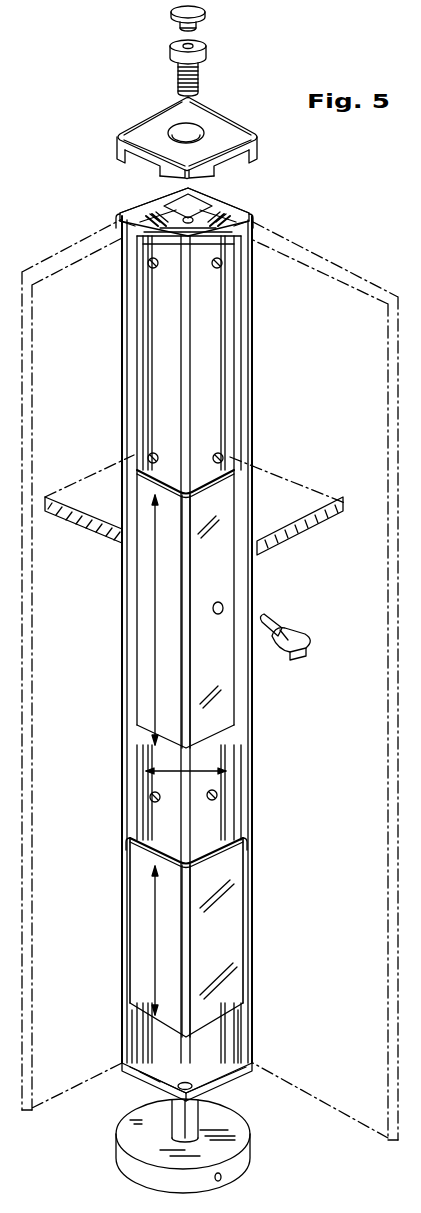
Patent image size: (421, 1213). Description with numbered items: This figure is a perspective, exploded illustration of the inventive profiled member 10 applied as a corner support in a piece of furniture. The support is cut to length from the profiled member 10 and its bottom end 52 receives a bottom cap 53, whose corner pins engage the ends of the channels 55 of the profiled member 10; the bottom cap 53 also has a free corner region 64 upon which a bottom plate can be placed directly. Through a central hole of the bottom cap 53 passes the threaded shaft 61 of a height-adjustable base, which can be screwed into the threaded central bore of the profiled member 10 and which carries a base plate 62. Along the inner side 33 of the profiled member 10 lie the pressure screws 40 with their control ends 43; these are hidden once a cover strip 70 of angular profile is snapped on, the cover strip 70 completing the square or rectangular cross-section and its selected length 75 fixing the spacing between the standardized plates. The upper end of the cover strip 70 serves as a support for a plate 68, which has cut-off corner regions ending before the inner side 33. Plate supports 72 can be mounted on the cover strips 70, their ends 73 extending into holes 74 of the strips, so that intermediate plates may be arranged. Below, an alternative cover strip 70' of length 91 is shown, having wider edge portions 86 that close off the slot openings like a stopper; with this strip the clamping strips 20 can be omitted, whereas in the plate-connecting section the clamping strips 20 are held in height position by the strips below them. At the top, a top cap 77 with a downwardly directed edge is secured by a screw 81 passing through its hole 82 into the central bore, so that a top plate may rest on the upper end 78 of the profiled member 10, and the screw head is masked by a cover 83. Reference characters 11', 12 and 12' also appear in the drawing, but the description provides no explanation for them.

The cover 83 is at (171, 14).
The screw 81 is at (170, 58).
The hole 82 is at (176, 128).
The top cap 77 is at (118, 136).
The upper end 78 is at (176, 212).
The clamping strip 20 is at (150, 214).
The wall panel 11' is at (206, 678).
The profiled member 10 is at (118, 655).
The inner side 33 is at (155, 362).
The control ends 43 is at (148, 266).
The pressure screws 40 is at (153, 272).
The cover strip 70 is at (149, 609).
The length 75 is at (153, 610).
The bottom plate 68 is at (316, 490).
The holes 74 is at (223, 608).
The ends 73 is at (268, 618).
The plate supports 72 is at (306, 640).
The post edge 12' is at (98, 834).
The post edge 12 is at (280, 831).
The edge portions 86 is at (130, 850).
The alternative cover strip 70' is at (228, 937).
The length 91 is at (155, 920).
The channels 55 is at (132, 1030).
The bottom end 52 is at (210, 1082).
The bottom cap 53 is at (140, 1082).
The free corner region 64 is at (150, 1088).
The threaded shaft 61 is at (195, 1121).
The base plate 62 is at (218, 1150).